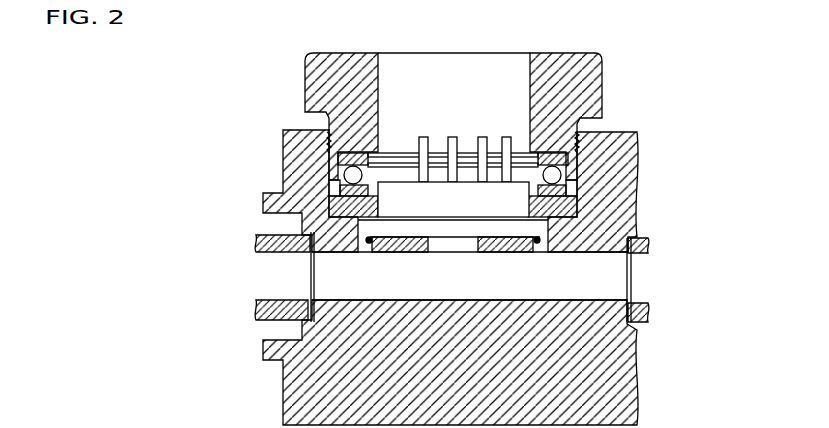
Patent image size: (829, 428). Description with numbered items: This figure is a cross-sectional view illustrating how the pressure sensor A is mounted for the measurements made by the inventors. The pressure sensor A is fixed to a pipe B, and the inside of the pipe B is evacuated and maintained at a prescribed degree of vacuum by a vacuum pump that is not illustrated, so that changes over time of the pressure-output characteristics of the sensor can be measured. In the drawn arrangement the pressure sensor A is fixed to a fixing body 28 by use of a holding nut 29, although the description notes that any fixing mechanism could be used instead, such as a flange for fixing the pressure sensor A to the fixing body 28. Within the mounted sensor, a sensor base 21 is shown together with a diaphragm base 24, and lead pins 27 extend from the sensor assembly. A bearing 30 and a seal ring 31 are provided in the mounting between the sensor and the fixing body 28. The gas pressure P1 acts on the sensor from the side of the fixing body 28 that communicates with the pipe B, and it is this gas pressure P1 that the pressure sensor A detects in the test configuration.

The holding nut 29 is at (578, 91).
The fixing body 28 is at (597, 357).
The sensor base 21 is at (437, 163).
The lead pin 27 is at (483, 138).
The diaphragm base 24 is at (393, 232).
The seal ring 31 is at (365, 243).
The bearing 30 is at (537, 243).
The gas pressure P1 is at (452, 242).
The pressure sensor A is at (497, 240).
The pipe B is at (608, 283).